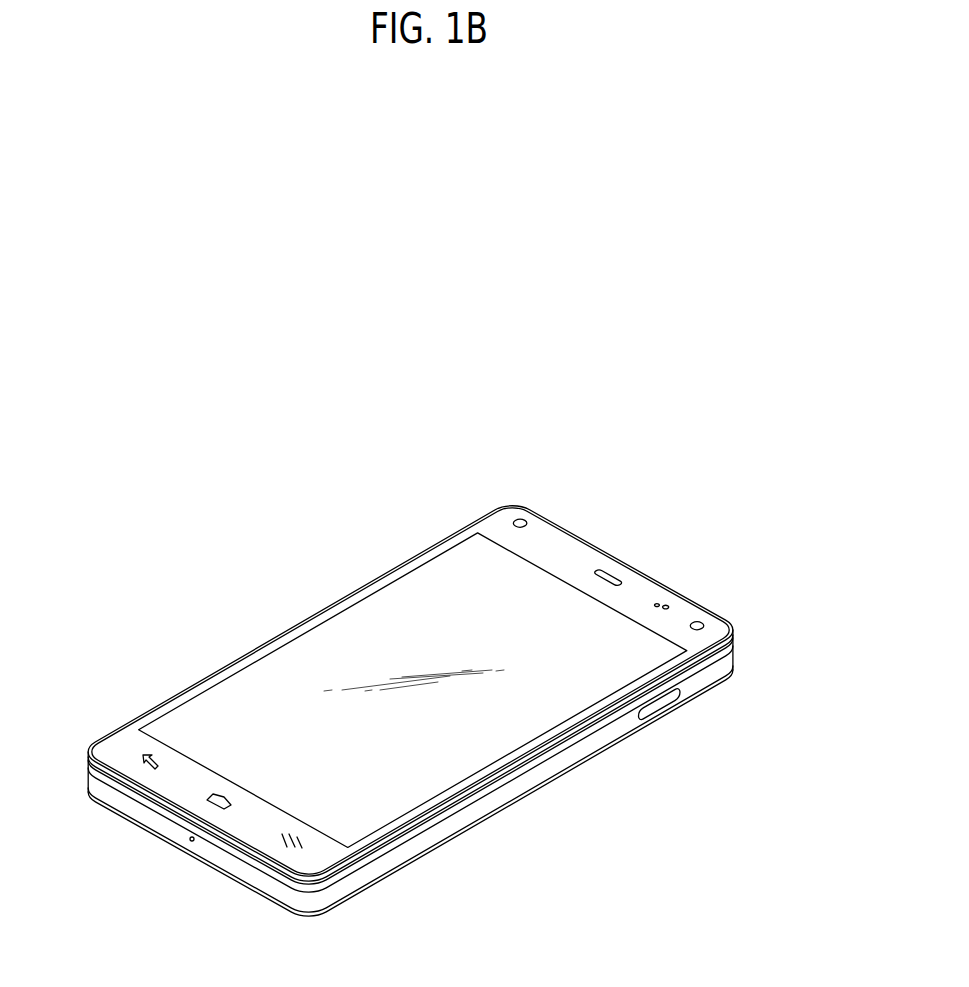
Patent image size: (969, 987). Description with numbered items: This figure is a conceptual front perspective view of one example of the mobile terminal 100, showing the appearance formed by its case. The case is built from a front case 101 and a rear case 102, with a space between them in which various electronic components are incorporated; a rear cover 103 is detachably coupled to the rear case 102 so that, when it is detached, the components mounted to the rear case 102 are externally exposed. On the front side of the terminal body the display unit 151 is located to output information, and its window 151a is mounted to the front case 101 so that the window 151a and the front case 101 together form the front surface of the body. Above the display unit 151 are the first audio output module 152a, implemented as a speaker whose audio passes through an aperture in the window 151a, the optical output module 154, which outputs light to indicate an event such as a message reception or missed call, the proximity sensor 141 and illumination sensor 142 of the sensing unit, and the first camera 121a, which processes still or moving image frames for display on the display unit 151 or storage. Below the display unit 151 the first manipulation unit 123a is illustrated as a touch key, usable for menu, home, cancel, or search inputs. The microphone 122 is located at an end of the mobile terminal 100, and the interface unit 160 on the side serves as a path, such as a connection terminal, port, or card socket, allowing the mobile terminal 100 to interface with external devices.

The mobile terminal 100 is at (296, 558).
The front case 101 is at (729, 646).
The rear case 102 is at (729, 663).
The rear cover 103 is at (723, 682).
The first camera 121a is at (701, 624).
The microphone 122 is at (189, 842).
The first manipulation unit 123a is at (280, 843).
The proximity sensor 141 is at (668, 603).
The illumination sensor 142 is at (658, 602).
The display unit 151 is at (283, 675).
The window 151a is at (442, 588).
The first audio output module 152a is at (607, 575).
The optical output module 154 is at (527, 522).
The interface unit 160 is at (658, 705).